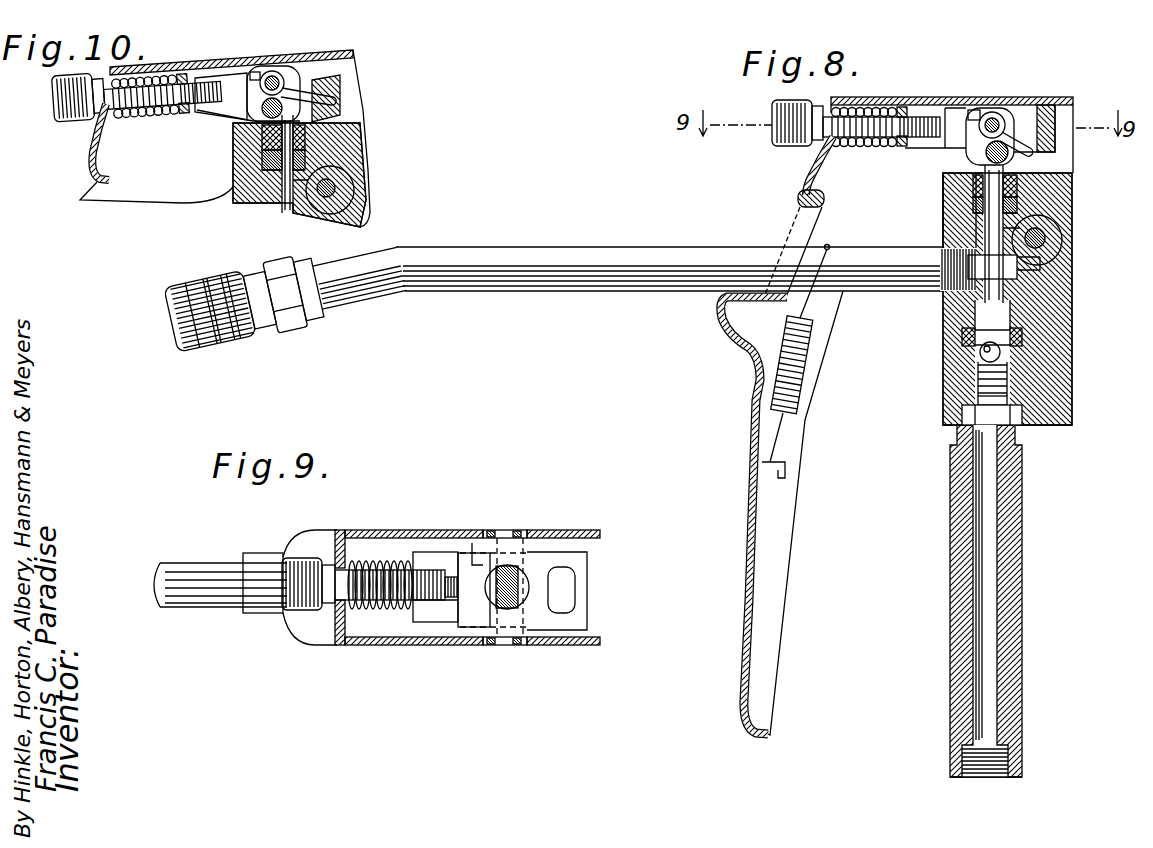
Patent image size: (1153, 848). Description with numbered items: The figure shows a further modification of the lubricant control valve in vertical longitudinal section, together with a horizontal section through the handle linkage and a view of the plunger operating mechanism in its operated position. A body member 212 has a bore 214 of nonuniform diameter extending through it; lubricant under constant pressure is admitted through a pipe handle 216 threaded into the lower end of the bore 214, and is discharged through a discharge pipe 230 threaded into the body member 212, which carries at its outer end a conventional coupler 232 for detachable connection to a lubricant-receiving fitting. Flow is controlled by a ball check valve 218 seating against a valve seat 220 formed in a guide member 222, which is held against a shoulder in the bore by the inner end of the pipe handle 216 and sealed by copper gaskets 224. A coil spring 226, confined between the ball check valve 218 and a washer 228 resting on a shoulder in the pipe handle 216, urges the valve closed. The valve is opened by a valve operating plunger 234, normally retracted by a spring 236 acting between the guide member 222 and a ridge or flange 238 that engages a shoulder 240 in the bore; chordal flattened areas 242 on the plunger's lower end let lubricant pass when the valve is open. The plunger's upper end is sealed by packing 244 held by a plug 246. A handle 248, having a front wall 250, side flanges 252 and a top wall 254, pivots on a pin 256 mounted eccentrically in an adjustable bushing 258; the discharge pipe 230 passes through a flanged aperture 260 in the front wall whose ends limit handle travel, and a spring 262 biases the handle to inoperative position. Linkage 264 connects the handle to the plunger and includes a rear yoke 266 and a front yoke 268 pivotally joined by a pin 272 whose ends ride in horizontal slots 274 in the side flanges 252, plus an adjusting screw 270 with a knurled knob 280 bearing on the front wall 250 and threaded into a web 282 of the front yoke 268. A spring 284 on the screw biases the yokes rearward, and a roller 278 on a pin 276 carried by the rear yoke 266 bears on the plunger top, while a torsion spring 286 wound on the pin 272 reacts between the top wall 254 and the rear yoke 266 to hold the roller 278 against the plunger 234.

In FIG. 8, the body member 212 is at (1052, 387).
In FIG. 10, the body member 212 is at (260, 193).
In FIG. 8, the bore 214 is at (1013, 283).
In FIG. 8, the pipe handle 216 is at (1020, 533).
In FIG. 8, the ball check valve 218 is at (1068, 358).
In FIG. 8, the valve seat 220 is at (1005, 343).
In FIG. 8, the guide member 222 is at (1007, 330).
In FIG. 8, the copper gaskets 224 is at (962, 340).
In FIG. 8, the coil spring 226 is at (1022, 393).
In FIG. 8, the washer 228 is at (1060, 417).
In FIG. 8, the discharge pipe 230 is at (650, 292).
In FIG. 8, the coupler 232 is at (240, 333).
In FIG. 8, the valve operating plunger 234 is at (1017, 218).
In FIG. 10, the valve operating plunger 234 is at (307, 177).
In FIG. 8, the spring 236 is at (938, 307).
In FIG. 8, the ridge or flange 238 is at (1040, 265).
In FIG. 8, the shoulder 240 is at (1045, 252).
In FIG. 8, the chordal flattened areas 242 is at (1013, 323).
In FIG. 8, the packing 244 is at (1017, 205).
In FIG. 10, the packing 244 is at (310, 157).
In FIG. 8, the plug 246 is at (1023, 192).
In FIG. 10, the plug 246 is at (314, 135).
In FIG. 8, the handle 248 is at (780, 563).
In FIG. 8, the front wall 250 is at (808, 172).
In FIG. 10, the front wall 250 is at (93, 150).
In FIG. 9, the front wall 250 is at (340, 620).
In FIG. 8, the side flanges 252 is at (943, 228).
In FIG. 9, the side flanges 252 is at (417, 532).
In FIG. 8, the top wall 254 is at (1040, 97).
In FIG. 10, the top wall 254 is at (332, 52).
In FIG. 8, the pin 256 is at (1050, 227).
In FIG. 10, the pin 256 is at (338, 190).
In FIG. 8, the bushing 258 is at (1046, 240).
In FIG. 10, the bushing 258 is at (340, 205).
In FIG. 8, the flanged aperture 260 is at (803, 232).
In FIG. 8, the spring 262 is at (803, 388).
In FIG. 8, the linkage 264 is at (1045, 98).
In FIG. 8, the rear yoke 266 is at (1040, 128).
In FIG. 10, the rear yoke 266 is at (315, 90).
In FIG. 9, the rear yoke 266 is at (563, 595).
In FIG. 8, the front yoke 268 is at (950, 116).
In FIG. 9, the front yoke 268 is at (445, 542).
In FIG. 8, the adjusting screw 270 is at (918, 120).
In FIG. 10, the adjusting screw 270 is at (207, 98).
In FIG. 9, the adjusting screw 270 is at (353, 570).
In FIG. 8, the pin 272 is at (993, 112).
In FIG. 10, the pin 272 is at (275, 76).
In FIG. 9, the pin 272 is at (529, 533).
In FIG. 9, the horizontal slots 274 is at (490, 530).
In FIG. 8, the pin 276 is at (985, 150).
In FIG. 10, the pin 276 is at (253, 112).
In FIG. 8, the roller 278 is at (988, 160).
In FIG. 10, the roller 278 is at (283, 112).
In FIG. 8, the knurled knob 280 is at (782, 146).
In FIG. 10, the knurled knob 280 is at (72, 127).
In FIG. 9, the knurled knob 280 is at (300, 605).
In FIG. 8, the web 282 is at (903, 107).
In FIG. 10, the web 282 is at (181, 70).
In FIG. 9, the web 282 is at (421, 617).
In FIG. 8, the spring 284 is at (845, 146).
In FIG. 10, the spring 284 is at (143, 110).
In FIG. 9, the spring 284 is at (388, 608).
In FIG. 8, the torsion spring 286 is at (975, 108).
In FIG. 10, the torsion spring 286 is at (262, 72).
In FIG. 9, the torsion spring 286 is at (510, 605).